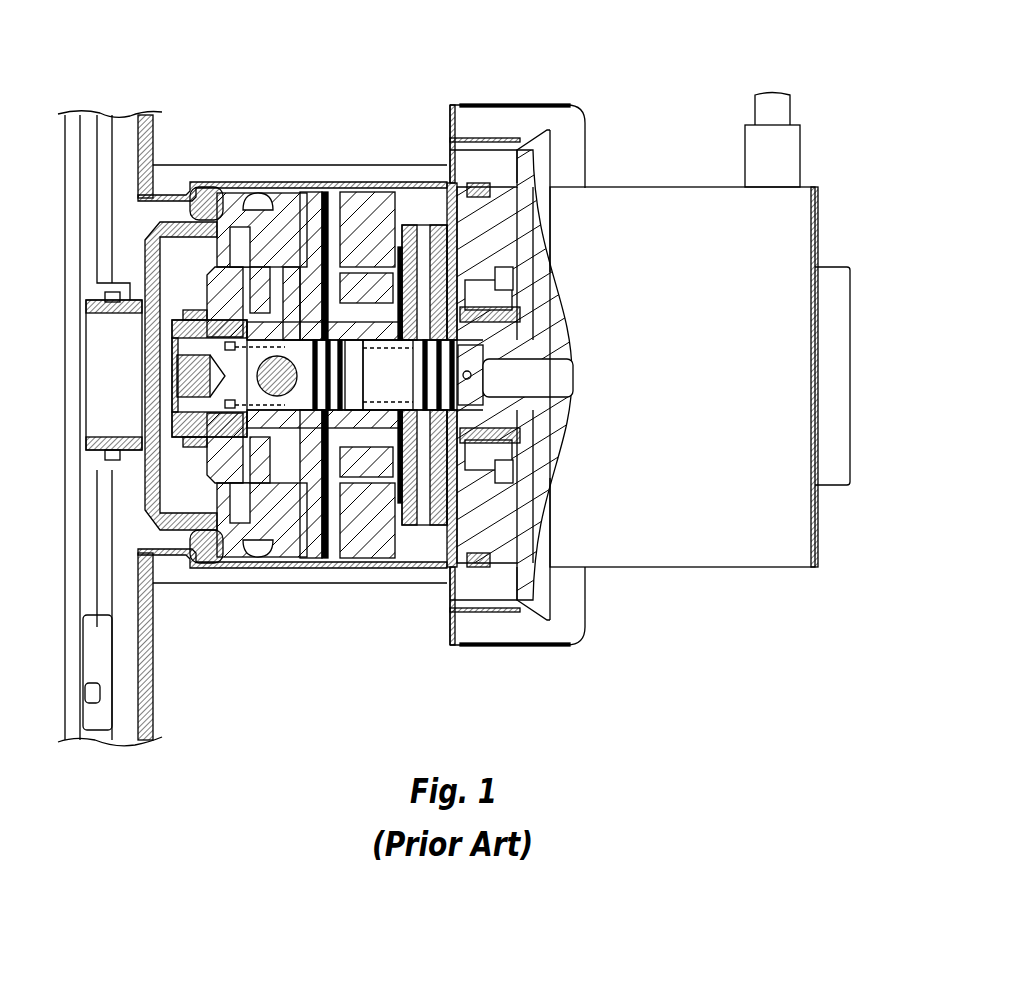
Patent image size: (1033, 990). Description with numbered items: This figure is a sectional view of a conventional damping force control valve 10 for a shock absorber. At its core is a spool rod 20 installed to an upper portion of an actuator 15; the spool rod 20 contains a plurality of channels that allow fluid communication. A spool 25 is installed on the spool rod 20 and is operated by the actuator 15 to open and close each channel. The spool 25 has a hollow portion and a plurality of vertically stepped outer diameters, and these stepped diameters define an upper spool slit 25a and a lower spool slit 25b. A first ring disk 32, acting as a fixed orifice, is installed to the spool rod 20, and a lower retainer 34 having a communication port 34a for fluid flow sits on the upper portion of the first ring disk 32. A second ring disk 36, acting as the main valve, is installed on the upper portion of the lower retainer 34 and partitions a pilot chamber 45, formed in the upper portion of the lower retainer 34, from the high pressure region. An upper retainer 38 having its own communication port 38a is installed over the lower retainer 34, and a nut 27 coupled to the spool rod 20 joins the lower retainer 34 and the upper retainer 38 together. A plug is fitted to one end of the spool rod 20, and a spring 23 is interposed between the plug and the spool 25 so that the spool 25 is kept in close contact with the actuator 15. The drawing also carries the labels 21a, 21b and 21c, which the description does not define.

The damping force control valve 10 is at (429, 82).
The actuator 15 is at (672, 203).
The spool rod 20 is at (375, 290).
The yoke flange portion 21a is at (453, 443).
The yoke lower portion 21b is at (347, 540).
The yoke side portion 21c is at (313, 537).
The spring 23 is at (255, 240).
The spool 25 is at (318, 280).
The upper spool slit 25a is at (300, 345).
The lower spool slit 25b is at (393, 330).
The nut 27 is at (218, 265).
The first ring disk 32 is at (433, 447).
The lower retainer 34 is at (385, 545).
The communication port 34a is at (410, 530).
The second ring disk 36 is at (320, 533).
The upper retainer 38 is at (210, 540).
The communication port 38a is at (230, 545).
The pilot chamber 45 is at (335, 290).